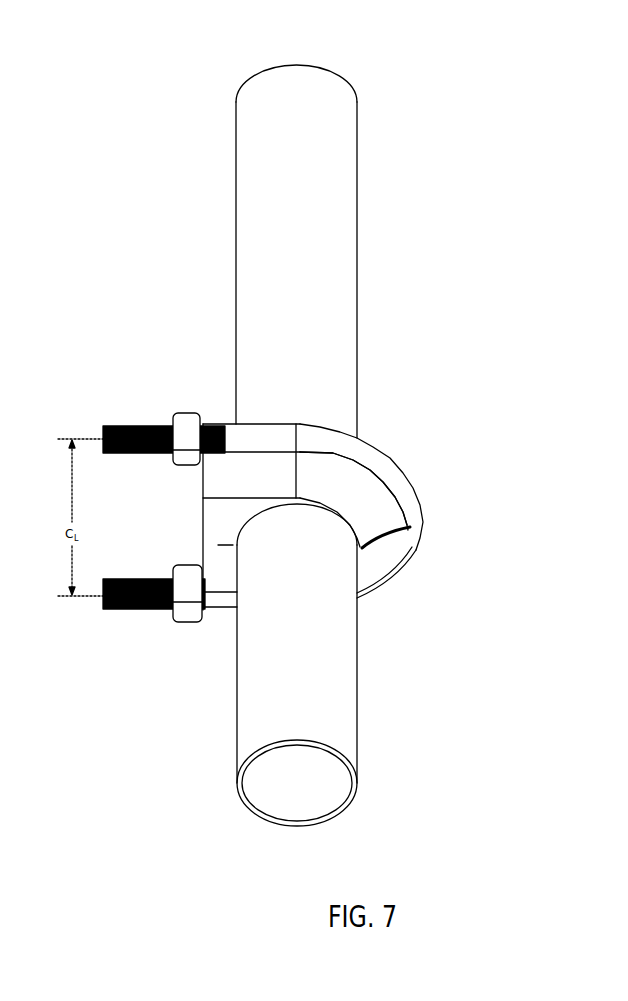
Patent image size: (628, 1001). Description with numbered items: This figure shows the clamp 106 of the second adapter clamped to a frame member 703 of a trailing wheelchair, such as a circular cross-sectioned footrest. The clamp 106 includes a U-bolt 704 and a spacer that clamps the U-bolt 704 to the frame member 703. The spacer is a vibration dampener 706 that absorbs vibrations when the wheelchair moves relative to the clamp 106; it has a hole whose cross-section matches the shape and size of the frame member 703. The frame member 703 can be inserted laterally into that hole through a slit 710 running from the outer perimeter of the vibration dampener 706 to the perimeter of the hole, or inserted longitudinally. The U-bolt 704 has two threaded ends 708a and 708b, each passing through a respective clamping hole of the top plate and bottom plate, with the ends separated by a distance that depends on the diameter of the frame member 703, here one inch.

The clamp 106 is at (372, 384).
The frame member 703 is at (315, 147).
The U-bolt 704 is at (378, 460).
The vibration dampener 706 is at (367, 493).
The threaded end 708a is at (103, 427).
The threaded end 708b is at (103, 607).
The slit 710 is at (400, 537).